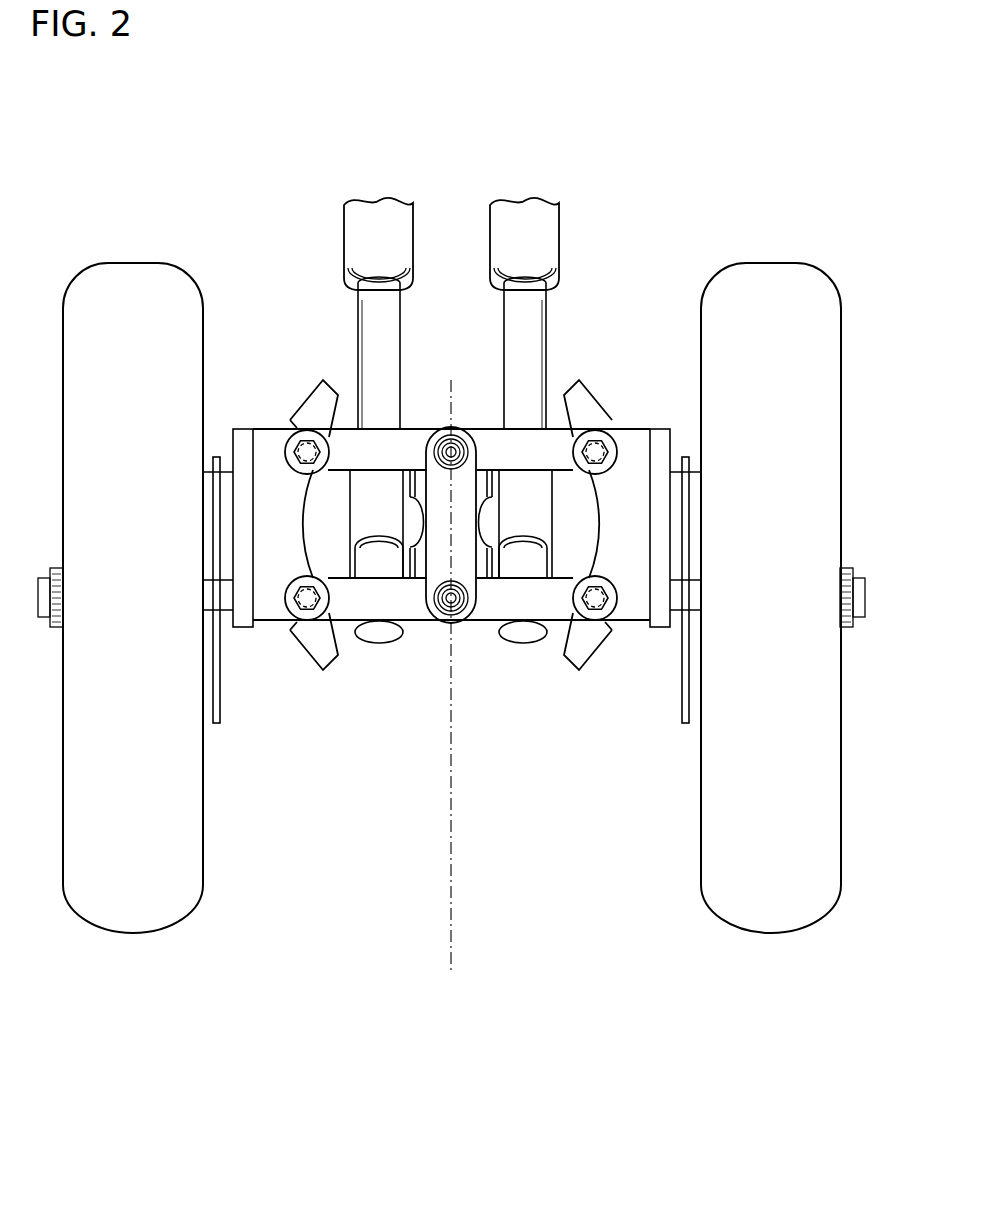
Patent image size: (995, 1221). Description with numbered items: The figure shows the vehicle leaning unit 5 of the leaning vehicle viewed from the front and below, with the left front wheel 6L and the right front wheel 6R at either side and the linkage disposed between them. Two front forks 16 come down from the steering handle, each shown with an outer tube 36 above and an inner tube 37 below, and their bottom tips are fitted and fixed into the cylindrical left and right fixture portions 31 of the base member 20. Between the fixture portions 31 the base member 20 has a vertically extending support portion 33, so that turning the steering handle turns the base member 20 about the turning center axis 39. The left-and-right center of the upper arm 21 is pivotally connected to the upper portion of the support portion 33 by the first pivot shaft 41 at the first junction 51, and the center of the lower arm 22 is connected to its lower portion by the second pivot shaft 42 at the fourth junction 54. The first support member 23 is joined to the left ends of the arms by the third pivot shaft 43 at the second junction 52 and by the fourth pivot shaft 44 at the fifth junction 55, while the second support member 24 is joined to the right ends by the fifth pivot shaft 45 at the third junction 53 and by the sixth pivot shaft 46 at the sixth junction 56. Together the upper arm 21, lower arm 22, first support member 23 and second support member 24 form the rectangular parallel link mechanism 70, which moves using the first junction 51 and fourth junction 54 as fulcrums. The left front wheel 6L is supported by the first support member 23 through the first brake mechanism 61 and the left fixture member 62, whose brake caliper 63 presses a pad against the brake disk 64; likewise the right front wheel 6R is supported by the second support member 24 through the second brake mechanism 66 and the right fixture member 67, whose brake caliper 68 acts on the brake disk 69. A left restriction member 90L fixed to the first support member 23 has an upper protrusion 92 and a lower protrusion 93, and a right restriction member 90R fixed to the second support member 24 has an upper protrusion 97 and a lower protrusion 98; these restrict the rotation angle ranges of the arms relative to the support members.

The vehicle leaning unit 5 is at (445, 992).
The right front wheel 6R is at (135, 268).
The left front wheel 6L is at (765, 272).
The front forks 16 is at (322, 218).
The base member 20 is at (347, 573).
The upper arm 21 is at (496, 442).
The lower arm 22 is at (415, 622).
The first support member 23 is at (643, 440).
The second support member 24 is at (262, 429).
The fixture portions 31 is at (380, 625).
The support portion 33 is at (545, 623).
The outer tube 36 is at (350, 263).
The inner tube 37 is at (510, 320).
The turning center axis 39 is at (452, 933).
The first pivot shaft 41 is at (438, 440).
The second pivot shaft 42 is at (464, 616).
The third pivot shaft 43 is at (608, 442).
The fourth pivot shaft 44 is at (647, 628).
The fifth pivot shaft 45 is at (296, 442).
The sixth pivot shaft 46 is at (265, 628).
The first junction 51 is at (460, 427).
The second junction 52 is at (568, 397).
The third junction 53 is at (334, 398).
The fourth junction 54 is at (446, 626).
The fifth junction 55 is at (577, 660).
The sixth junction 56 is at (322, 672).
The first brake mechanism 61 is at (697, 552).
The left fixture member 62 is at (684, 700).
The brake caliper 63 is at (693, 482).
The brake disk 64 is at (690, 676).
The second brake mechanism 66 is at (205, 552).
The right fixture member 67 is at (250, 628).
The brake caliper 68 is at (213, 472).
The brake disk 69 is at (213, 680).
The parallel link mechanism 70 is at (470, 697).
The right restriction member 90R is at (340, 665).
The left restriction member 90L is at (561, 665).
The upper protrusion 92 is at (600, 384).
The lower protrusion 93 is at (597, 665).
The upper protrusion 97 is at (265, 428).
The lower protrusion 98 is at (297, 650).